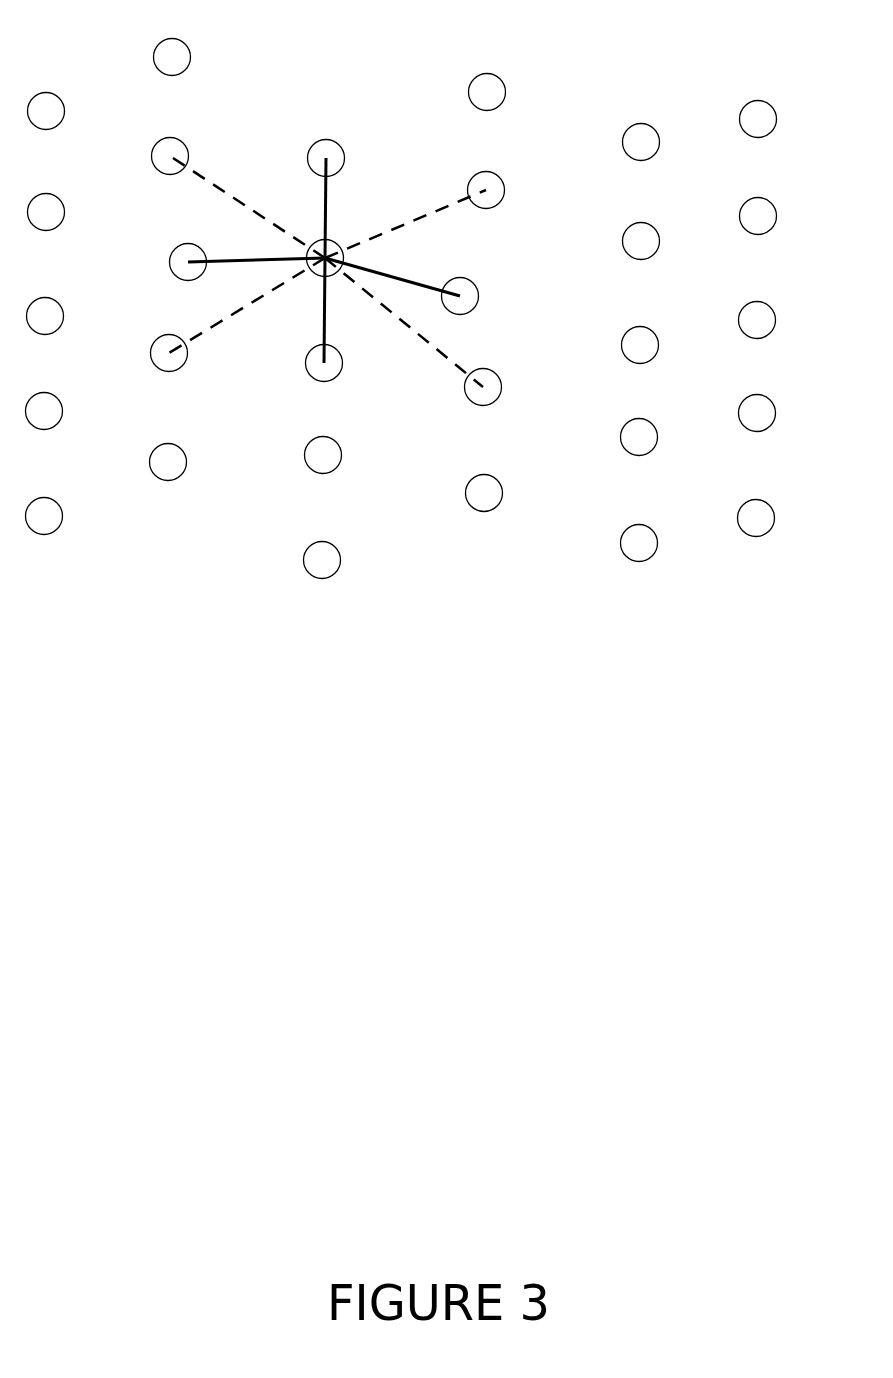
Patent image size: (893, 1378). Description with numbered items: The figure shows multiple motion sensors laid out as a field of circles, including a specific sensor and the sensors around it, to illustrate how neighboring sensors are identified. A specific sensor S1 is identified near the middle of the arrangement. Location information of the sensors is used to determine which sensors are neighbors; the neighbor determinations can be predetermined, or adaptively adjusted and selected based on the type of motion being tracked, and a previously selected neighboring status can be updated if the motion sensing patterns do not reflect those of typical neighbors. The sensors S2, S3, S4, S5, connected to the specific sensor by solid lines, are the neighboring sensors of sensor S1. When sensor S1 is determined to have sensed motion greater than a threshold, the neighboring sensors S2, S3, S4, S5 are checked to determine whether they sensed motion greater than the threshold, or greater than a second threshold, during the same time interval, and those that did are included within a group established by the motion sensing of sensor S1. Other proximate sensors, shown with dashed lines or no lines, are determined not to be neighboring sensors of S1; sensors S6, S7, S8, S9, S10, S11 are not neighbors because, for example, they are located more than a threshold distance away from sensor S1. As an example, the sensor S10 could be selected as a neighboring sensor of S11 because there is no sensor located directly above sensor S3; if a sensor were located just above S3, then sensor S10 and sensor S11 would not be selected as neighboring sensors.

The specific sensor S1 is at (313, 236).
The neighboring sensor S2 is at (476, 280).
The neighboring sensor S3 is at (312, 143).
The neighboring sensor S4 is at (192, 246).
The neighboring sensor S5 is at (303, 361).
The non-neighboring sensor S6 is at (470, 175).
The non-neighboring sensor S7 is at (488, 363).
The non-neighboring sensor S8 is at (158, 333).
The non-neighboring sensor S9 is at (198, 147).
The non-neighboring sensor S10 is at (490, 70).
The non-neighboring sensor S11 is at (168, 39).